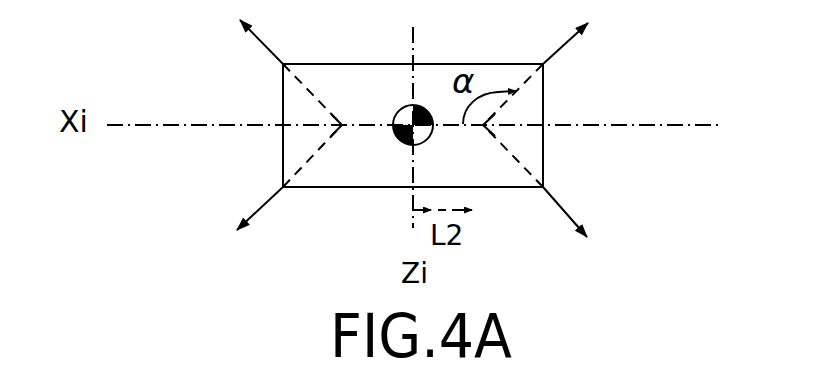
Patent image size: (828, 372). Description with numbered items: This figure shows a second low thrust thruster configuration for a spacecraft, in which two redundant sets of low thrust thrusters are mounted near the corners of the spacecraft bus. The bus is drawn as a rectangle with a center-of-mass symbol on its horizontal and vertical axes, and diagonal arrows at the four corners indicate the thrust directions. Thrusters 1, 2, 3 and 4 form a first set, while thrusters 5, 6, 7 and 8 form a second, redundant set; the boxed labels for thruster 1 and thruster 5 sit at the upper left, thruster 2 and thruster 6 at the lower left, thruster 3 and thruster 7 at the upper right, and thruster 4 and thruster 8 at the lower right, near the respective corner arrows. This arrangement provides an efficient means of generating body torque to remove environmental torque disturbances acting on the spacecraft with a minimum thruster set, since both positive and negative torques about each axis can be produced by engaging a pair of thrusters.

The thruster 1 is at (152, 57).
The thruster 2 is at (151, 187).
The thruster 3 is at (590, 63).
The thruster 4 is at (588, 194).
The thruster 5 is at (236, 57).
The thruster 6 is at (234, 187).
The thruster 7 is at (672, 63).
The thruster 8 is at (671, 194).